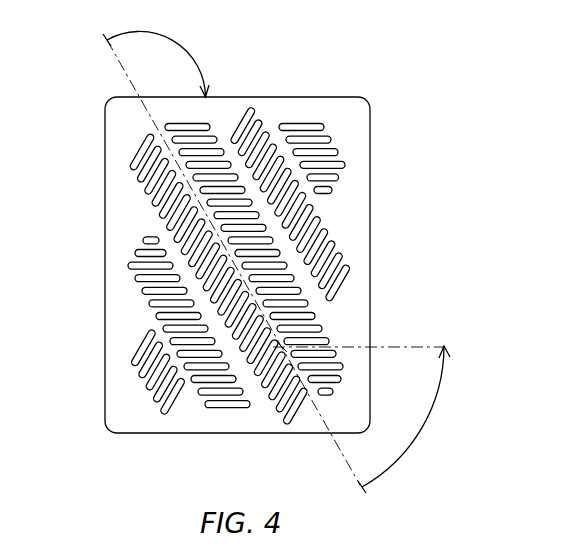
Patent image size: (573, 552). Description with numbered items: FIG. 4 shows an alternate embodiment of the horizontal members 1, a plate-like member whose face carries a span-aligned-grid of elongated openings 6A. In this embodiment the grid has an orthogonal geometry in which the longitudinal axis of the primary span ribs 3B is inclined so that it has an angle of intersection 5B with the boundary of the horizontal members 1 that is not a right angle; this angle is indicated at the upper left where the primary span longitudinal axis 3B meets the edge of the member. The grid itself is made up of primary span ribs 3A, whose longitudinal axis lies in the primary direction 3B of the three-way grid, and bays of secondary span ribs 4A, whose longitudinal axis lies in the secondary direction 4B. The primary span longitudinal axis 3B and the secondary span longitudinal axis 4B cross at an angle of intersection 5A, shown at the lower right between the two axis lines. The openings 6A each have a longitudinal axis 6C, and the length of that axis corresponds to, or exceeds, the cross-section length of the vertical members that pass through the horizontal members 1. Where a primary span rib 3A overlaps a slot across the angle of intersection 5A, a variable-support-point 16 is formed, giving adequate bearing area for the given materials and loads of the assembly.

The horizontal member 1 is at (249, 97).
The variable-support-point 16 is at (168, 147).
The opening 6A is at (156, 175).
The longitudinal axis of the opening 6C is at (143, 202).
The primary span rib 3A is at (313, 397).
The primary span longitudinal axis 3B is at (337, 445).
The secondary span rib 4A is at (317, 347).
The secondary span longitudinal axis 4B is at (375, 347).
The angle of intersection 5A is at (423, 422).
The angle of intersection 5B is at (181, 44).